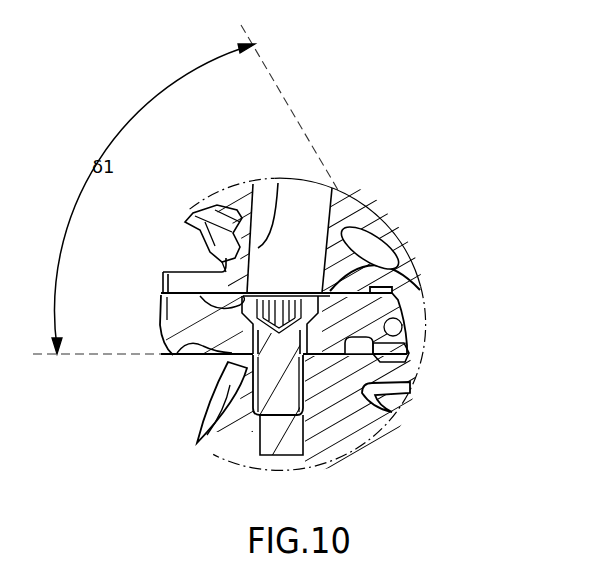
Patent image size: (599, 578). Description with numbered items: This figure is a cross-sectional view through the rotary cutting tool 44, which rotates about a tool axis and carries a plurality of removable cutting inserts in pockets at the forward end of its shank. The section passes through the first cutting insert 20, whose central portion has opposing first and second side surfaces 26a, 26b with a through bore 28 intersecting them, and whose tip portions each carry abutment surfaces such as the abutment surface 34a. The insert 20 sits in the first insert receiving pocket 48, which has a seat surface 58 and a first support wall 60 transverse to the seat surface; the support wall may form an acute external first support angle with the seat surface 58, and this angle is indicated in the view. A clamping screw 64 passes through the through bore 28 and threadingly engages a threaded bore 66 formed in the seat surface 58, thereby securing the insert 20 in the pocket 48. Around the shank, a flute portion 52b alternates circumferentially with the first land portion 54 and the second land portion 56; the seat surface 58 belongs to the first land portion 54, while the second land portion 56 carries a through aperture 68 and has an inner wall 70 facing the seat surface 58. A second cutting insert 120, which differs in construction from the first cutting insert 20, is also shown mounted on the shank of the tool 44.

The first cutting insert 20 is at (187, 323).
The first side surface 26a is at (318, 357).
The second side surface 26b is at (342, 288).
The through bore 28 is at (307, 295).
The abutment surface 34a is at (405, 301).
The rotary cutting tool 44 is at (375, 200).
The first insert receiving pocket 48 is at (225, 362).
The flute portion 52b is at (188, 370).
The first land portion 54 is at (358, 425).
The second land portion 56 is at (240, 197).
The seat surface 58 is at (400, 272).
The first support wall 60 is at (407, 338).
The clamping screw 64 is at (273, 390).
The threaded bore 66 is at (283, 430).
The through aperture 68 is at (294, 213).
The inner wall 70 is at (210, 303).
The second cutting insert 120 is at (222, 247).